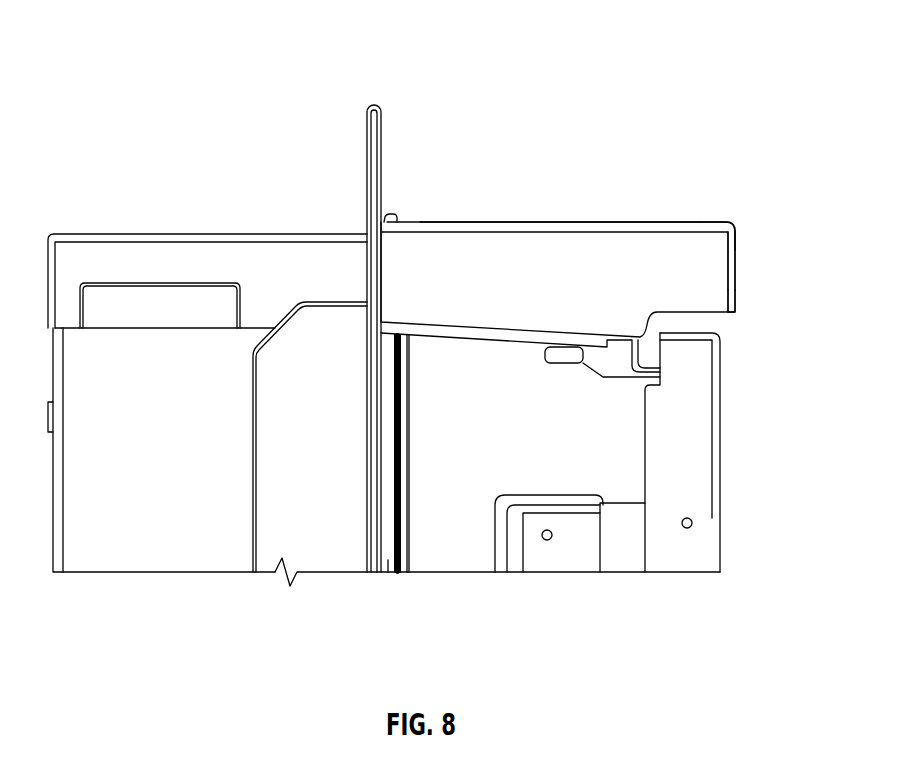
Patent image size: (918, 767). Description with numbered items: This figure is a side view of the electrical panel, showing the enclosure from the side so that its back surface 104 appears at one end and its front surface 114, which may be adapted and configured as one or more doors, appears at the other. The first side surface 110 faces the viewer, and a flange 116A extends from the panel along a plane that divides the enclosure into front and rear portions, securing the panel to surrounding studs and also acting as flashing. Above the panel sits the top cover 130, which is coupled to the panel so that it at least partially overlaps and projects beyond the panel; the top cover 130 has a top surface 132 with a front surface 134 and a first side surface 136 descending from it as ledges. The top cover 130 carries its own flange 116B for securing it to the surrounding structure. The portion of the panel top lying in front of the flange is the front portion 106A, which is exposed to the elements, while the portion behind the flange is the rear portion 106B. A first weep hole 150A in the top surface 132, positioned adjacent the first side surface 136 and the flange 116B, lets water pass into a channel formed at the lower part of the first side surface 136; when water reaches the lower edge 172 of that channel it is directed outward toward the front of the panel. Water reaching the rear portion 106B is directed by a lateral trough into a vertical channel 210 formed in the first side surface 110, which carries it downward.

The back surface 104 is at (53, 540).
The front portion of the top surface 106A is at (653, 222).
The rear portion of the top surface 106B is at (158, 234).
The first side surface 110 is at (205, 535).
The front surface 114 is at (720, 553).
The flange 116A is at (378, 513).
The flange 116B is at (380, 105).
The top cover 130 is at (720, 222).
The top surface 132 is at (518, 222).
The front surface 134 is at (735, 258).
The first side surface 136 is at (662, 278).
The first weep hole 150A is at (387, 205).
The lower edge 172 is at (660, 377).
The vertical channel 210 is at (388, 555).